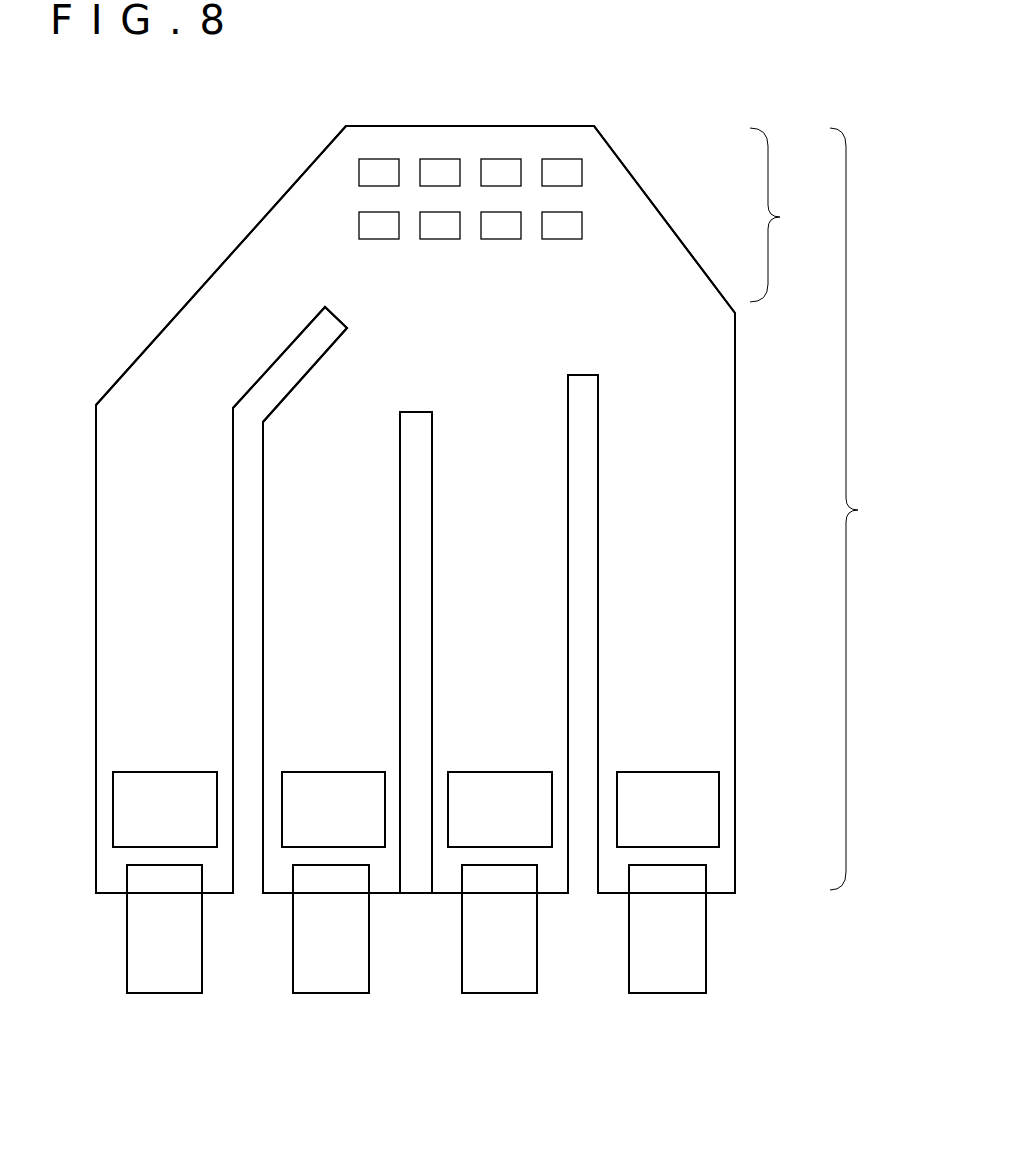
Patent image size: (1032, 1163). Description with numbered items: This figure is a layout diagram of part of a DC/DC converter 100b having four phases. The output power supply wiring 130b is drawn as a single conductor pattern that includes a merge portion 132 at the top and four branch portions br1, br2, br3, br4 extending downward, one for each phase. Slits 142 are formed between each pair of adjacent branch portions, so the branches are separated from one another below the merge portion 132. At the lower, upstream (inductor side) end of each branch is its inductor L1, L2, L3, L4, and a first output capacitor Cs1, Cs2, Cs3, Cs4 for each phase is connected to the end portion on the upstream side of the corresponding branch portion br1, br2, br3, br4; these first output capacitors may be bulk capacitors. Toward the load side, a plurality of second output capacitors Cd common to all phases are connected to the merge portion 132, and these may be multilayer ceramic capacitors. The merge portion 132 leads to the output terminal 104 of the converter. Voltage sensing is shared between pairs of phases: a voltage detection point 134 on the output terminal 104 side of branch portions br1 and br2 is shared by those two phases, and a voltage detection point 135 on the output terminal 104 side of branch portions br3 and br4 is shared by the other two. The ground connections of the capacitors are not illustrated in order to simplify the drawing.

The output terminal 104 is at (470, 110).
The second output capacitor Cd is at (566, 225).
The merge portion 132 is at (788, 215).
The output power supply wiring 130b is at (508, 509).
The voltage detection point 134 is at (338, 312).
The voltage detection point 135 is at (583, 368).
The branch portion br1 is at (115, 557).
The branch portion br2 is at (307, 548).
The branch portion br3 is at (523, 548).
The branch portion br4 is at (713, 557).
The slit 142 is at (250, 605).
The first output capacitor Cs1 is at (160, 790).
The first output capacitor Cs2 is at (328, 790).
The first output capacitor Cs3 is at (495, 790).
The first output capacitor Cs4 is at (662, 790).
The inductor L1 is at (163, 975).
The inductor L2 is at (331, 975).
The inductor L3 is at (499, 975).
The inductor L4 is at (666, 975).
The DC/DC converter 100b is at (444, 1122).